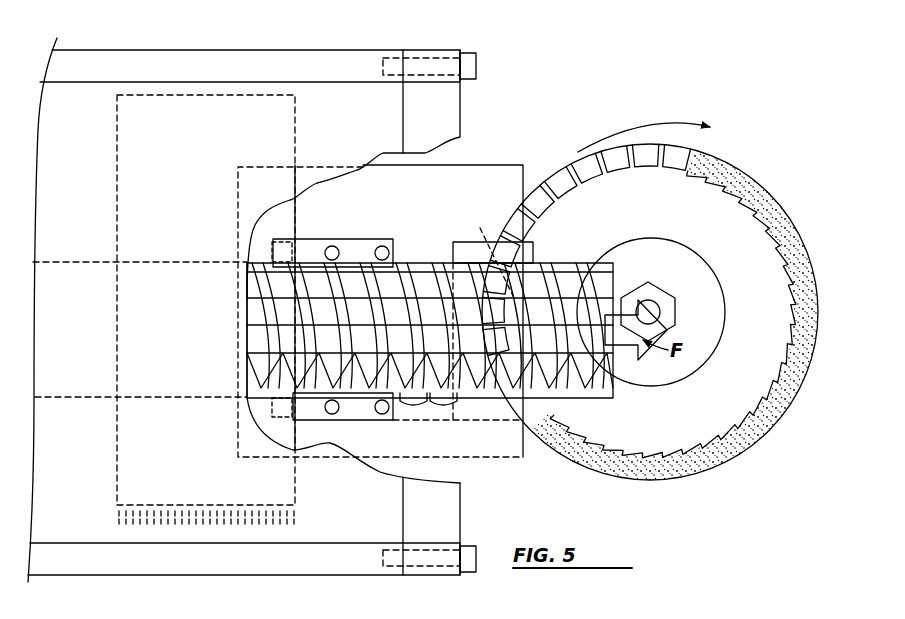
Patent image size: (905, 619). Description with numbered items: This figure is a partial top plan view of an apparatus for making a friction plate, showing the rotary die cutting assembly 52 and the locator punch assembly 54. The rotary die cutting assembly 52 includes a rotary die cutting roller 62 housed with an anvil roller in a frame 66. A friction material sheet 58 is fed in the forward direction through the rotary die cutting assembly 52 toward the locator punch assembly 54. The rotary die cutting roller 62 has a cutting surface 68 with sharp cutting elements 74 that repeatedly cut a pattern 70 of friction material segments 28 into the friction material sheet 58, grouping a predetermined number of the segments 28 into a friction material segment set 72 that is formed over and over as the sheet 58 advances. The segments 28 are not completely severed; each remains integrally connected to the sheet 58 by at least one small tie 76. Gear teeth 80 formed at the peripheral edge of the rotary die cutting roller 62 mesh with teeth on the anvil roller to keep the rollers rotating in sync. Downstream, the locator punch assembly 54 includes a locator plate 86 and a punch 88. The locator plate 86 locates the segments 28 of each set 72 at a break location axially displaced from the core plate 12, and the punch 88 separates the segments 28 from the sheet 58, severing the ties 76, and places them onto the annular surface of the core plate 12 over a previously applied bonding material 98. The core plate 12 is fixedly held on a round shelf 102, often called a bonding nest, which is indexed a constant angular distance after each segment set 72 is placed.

The core plate 12 is at (735, 166).
The friction material segments 28 is at (437, 269).
The rotary die cutting assembly 52 is at (312, 96).
The locator punch assembly 54 is at (488, 177).
The friction material sheet 58 is at (57, 321).
The rotary die cutting roller 62 is at (135, 167).
The frame 66 is at (204, 50).
The cutting surface 68 is at (258, 394).
The pattern 70 is at (418, 262).
The friction material segment set 72 is at (413, 403).
The sharp cutting elements 74 is at (248, 310).
The tie 76 is at (302, 287).
The gear teeth 80 is at (115, 514).
The locator plate 86 is at (462, 183).
The punch 88 is at (470, 240).
The bonding material 98 is at (663, 477).
The round shelf 102 is at (725, 237).